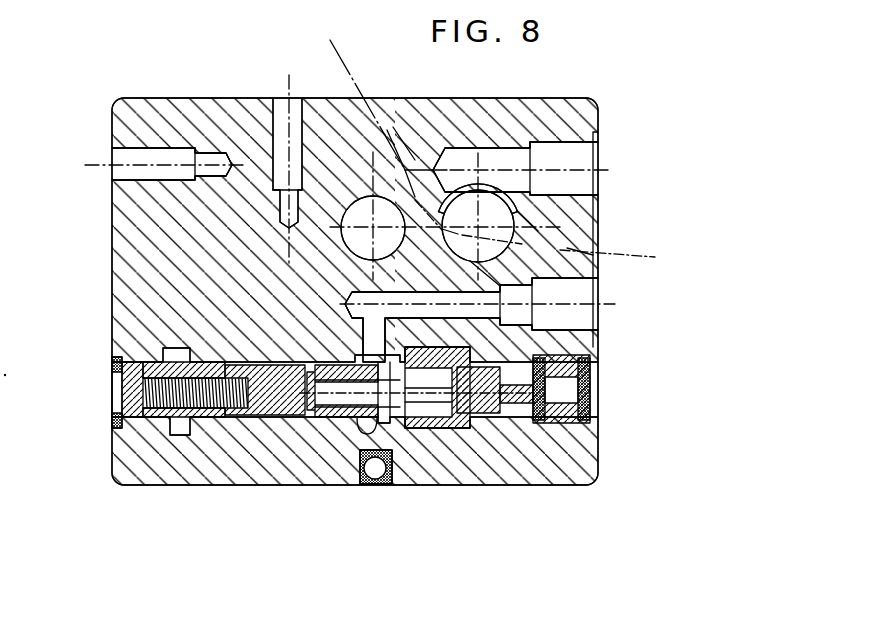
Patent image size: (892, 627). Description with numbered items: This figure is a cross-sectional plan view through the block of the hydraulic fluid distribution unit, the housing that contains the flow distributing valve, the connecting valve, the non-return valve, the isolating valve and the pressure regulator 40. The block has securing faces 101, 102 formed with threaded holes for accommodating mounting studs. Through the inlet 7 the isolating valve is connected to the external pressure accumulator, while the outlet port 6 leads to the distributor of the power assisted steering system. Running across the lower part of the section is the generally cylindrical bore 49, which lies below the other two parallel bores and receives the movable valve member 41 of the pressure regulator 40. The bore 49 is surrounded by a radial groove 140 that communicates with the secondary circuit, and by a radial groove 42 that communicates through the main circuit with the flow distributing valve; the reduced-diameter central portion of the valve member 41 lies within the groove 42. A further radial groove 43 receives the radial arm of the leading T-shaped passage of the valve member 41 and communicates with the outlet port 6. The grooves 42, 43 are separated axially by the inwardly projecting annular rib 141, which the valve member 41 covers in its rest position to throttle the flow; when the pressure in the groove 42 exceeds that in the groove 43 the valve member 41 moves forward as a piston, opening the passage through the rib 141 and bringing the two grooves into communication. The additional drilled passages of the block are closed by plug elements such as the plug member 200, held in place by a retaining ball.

The securing face 102 is at (142, 92).
The securing face 101 is at (104, 155).
The inlet 7 is at (627, 158).
The outlet port 6 is at (630, 330).
The radial groove 140 is at (178, 432).
The pressure regulator 40 is at (243, 433).
The bore 49 is at (290, 427).
The radial groove 43 is at (353, 435).
The plug member 200 is at (362, 487).
The annular rib 141 is at (400, 425).
The radial groove 42 is at (445, 422).
The valve member 41 is at (503, 422).